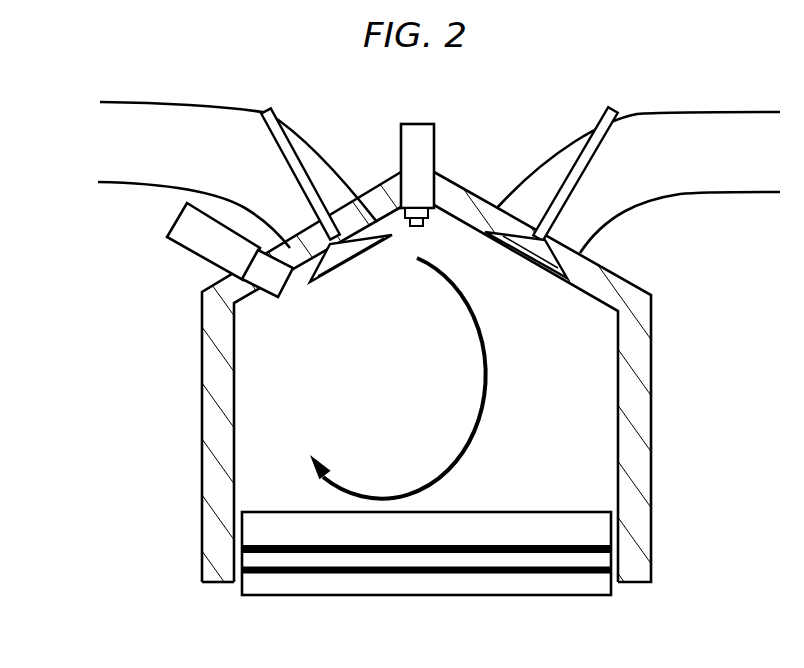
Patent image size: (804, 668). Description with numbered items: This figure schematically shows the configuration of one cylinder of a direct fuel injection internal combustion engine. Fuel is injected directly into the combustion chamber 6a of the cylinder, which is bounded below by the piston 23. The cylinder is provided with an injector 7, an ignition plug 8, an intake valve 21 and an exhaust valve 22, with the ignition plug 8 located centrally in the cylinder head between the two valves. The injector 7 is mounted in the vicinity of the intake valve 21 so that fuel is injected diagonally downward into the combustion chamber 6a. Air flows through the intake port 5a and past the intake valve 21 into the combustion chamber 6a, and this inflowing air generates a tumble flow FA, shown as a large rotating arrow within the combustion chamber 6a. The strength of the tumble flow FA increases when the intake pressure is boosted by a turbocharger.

The intake port 5a is at (150, 185).
The combustion chamber 6a is at (435, 311).
The injector 7 is at (190, 253).
The ignition plug 8 is at (436, 142).
The intake valve 21 is at (290, 140).
The exhaust valve 22 is at (580, 150).
The piston 23 is at (538, 513).
The tumble flow FA is at (517, 383).